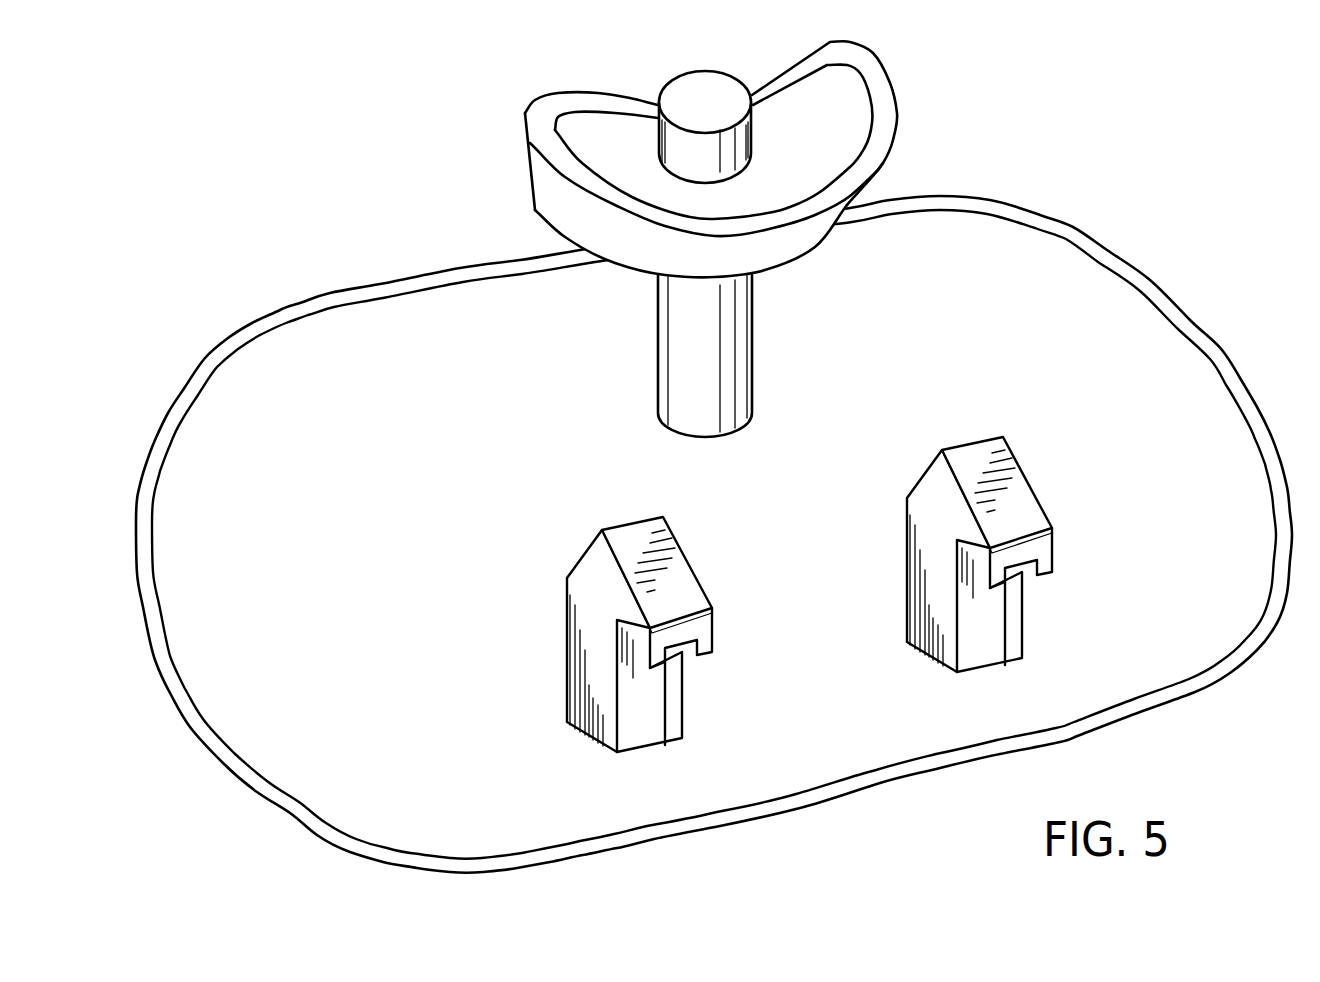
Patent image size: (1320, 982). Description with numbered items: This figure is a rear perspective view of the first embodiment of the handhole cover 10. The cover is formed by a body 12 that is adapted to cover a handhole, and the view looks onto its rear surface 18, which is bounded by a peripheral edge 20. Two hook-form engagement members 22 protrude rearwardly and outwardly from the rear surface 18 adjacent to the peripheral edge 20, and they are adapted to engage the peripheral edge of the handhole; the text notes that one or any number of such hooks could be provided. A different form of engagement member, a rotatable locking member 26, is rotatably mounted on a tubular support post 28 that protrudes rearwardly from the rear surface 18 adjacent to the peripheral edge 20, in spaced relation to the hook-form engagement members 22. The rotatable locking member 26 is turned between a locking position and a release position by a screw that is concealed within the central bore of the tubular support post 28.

The handhole cover 10 is at (726, 457).
The body 12 is at (726, 531).
The rear surface 18 is at (1043, 280).
The peripheral edge 20 is at (1247, 380).
The hook-form engagement members 22 is at (689, 562).
The rotatable locking member 26 is at (896, 122).
The tubular support post 28 is at (752, 352).